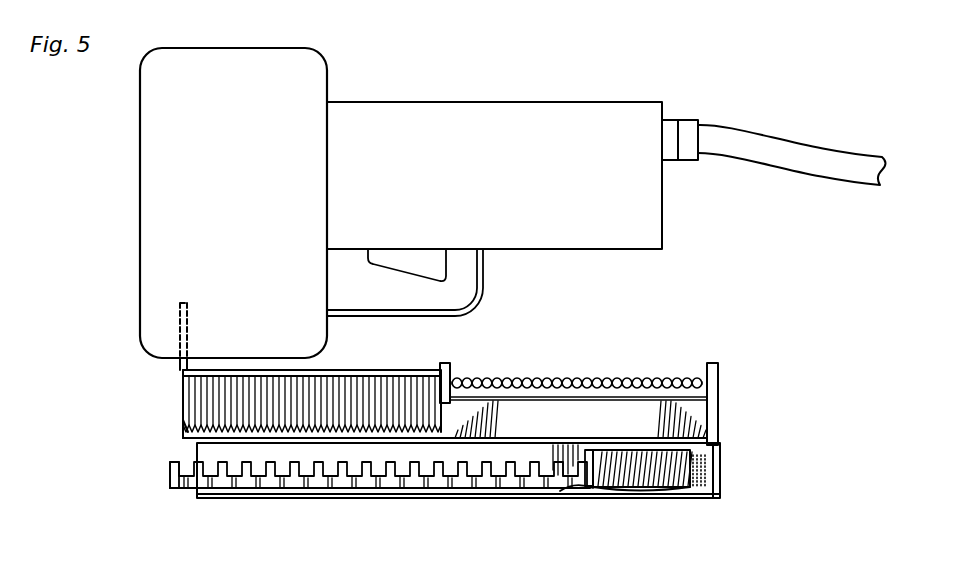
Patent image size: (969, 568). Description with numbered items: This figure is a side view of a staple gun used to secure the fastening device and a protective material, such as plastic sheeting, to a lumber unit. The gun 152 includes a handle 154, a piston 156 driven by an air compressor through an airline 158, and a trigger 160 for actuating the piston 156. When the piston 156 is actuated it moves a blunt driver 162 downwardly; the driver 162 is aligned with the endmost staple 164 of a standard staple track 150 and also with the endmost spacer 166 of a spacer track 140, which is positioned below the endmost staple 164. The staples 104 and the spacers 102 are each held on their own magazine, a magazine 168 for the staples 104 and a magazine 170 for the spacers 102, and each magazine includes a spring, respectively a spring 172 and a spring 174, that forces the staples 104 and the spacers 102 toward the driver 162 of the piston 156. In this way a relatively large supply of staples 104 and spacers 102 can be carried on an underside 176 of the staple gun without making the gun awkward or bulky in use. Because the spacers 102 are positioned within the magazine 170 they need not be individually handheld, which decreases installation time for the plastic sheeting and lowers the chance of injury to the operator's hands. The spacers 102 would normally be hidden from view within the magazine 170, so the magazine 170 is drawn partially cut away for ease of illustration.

The spacers 102 is at (215, 483).
The staples 104 is at (340, 367).
The spacer track 140 is at (350, 485).
The standard staple track 150 is at (418, 368).
The gun 152 is at (511, 117).
The handle 154 is at (371, 117).
The piston 156 is at (217, 65).
The airline 158 is at (737, 140).
The trigger 160 is at (435, 261).
The blunt driver 162 is at (186, 324).
The endmost staple 164 is at (184, 405).
The endmost spacer 166 is at (170, 456).
The magazine 168 is at (631, 372).
The magazine 170 is at (677, 490).
The spring 172 is at (540, 372).
The spring 174 is at (640, 458).
The underside 176 is at (422, 497).